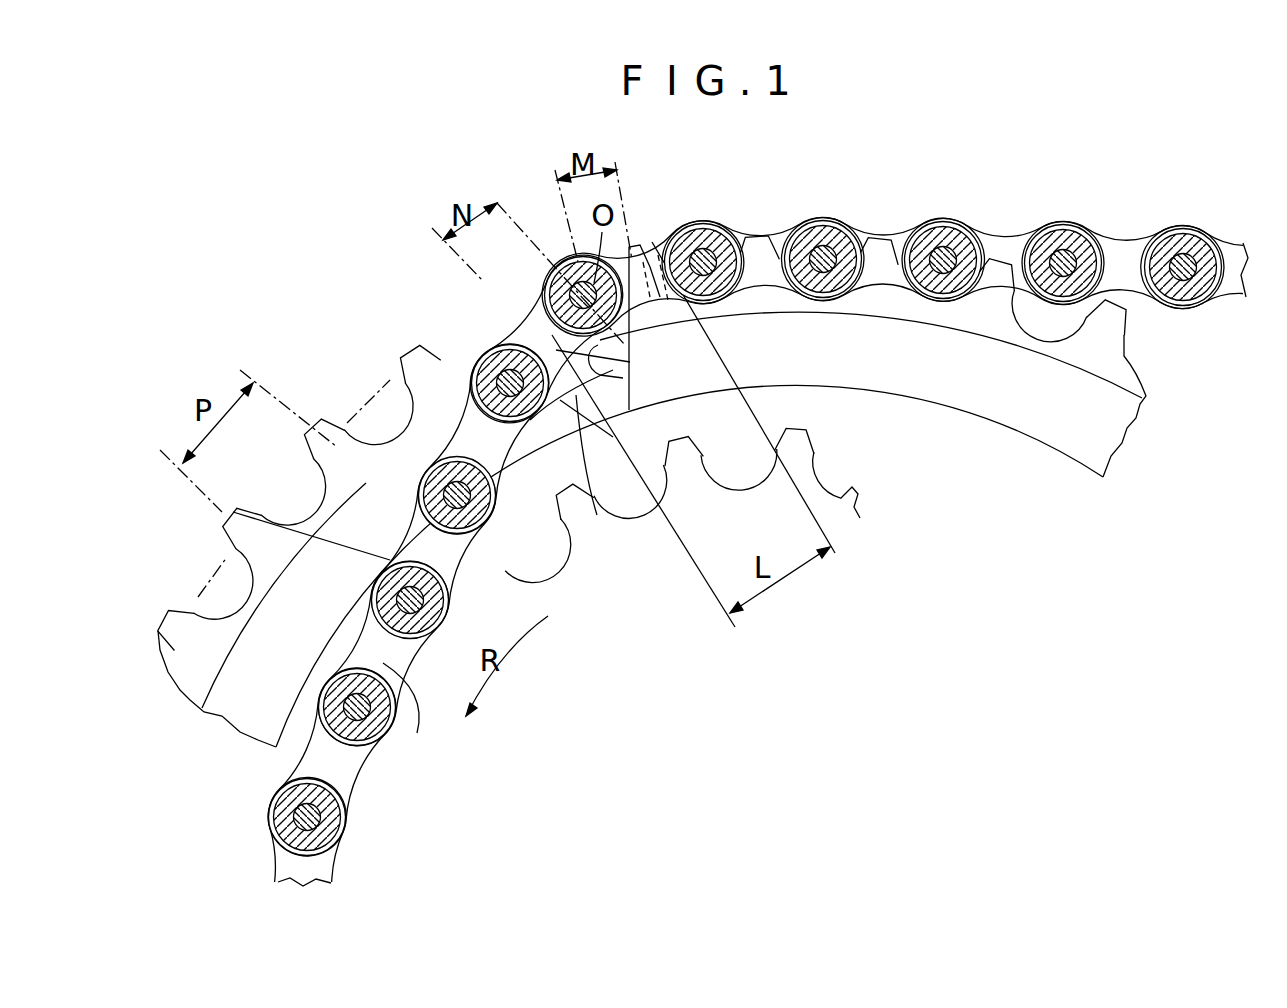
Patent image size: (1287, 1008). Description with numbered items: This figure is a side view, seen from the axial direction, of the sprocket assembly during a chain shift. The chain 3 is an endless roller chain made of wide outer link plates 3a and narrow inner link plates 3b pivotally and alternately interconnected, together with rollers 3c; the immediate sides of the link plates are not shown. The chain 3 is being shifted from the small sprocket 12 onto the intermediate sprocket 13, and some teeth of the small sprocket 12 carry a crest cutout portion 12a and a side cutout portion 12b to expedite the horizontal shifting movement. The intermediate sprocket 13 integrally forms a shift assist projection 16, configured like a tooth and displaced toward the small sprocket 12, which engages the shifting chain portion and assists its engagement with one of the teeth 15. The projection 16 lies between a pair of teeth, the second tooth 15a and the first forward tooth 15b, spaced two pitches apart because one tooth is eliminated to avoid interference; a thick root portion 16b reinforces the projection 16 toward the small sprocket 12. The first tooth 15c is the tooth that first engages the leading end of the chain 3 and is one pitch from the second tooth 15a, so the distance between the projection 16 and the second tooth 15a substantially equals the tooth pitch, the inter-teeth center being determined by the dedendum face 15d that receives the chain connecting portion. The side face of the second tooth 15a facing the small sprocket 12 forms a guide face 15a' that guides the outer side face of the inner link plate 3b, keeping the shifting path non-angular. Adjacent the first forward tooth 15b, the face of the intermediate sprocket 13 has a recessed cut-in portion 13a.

The chain 3 is at (774, 570).
The outer link plate 3a is at (826, 226).
The inner link plate 3b is at (687, 310).
The roller 3c is at (906, 240).
The small sprocket 12 is at (832, 458).
The crest cutout portion 12a is at (528, 567).
The side cutout portion 12b is at (416, 714).
The intermediate sprocket 13 is at (1135, 362).
The cut-in portion 13a is at (311, 554).
The teeth 15 is at (166, 614).
The second tooth 15a is at (729, 348).
The guide face 15a' is at (681, 240).
The first forward tooth 15b is at (408, 345).
The first tooth 15c is at (761, 238).
The dedendum face 15d is at (630, 378).
The shift assist projection 16 is at (540, 347).
The root portion 16b is at (597, 516).